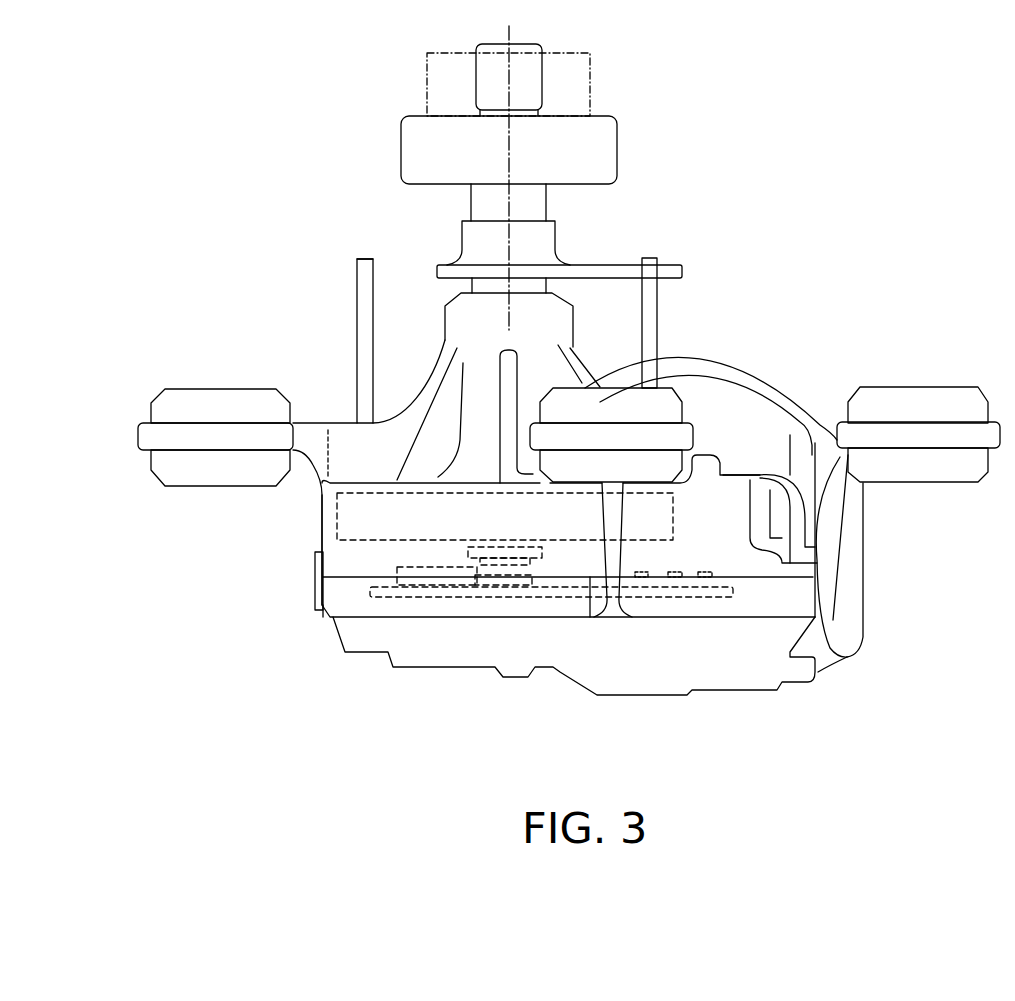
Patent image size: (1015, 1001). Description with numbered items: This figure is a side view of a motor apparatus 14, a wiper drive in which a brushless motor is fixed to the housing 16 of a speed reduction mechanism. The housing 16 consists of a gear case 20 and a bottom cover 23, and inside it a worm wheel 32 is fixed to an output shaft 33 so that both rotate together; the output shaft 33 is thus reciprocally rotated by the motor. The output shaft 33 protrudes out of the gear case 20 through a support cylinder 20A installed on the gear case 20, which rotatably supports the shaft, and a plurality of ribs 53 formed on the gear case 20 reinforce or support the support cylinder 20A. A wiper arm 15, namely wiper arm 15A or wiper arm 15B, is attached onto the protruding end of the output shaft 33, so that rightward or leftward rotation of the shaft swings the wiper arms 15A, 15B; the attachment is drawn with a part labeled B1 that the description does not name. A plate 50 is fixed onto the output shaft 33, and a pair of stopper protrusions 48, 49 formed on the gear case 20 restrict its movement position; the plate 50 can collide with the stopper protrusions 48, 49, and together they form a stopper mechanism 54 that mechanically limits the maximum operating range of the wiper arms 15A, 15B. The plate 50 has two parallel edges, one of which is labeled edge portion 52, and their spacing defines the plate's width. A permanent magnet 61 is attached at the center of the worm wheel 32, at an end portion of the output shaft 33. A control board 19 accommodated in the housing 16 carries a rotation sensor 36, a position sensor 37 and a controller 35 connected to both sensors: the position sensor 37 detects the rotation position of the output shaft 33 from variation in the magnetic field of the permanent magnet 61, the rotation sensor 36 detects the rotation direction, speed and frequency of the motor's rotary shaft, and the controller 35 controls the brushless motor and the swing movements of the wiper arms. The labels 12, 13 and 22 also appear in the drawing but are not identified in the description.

The drive unit 12 is at (262, 93).
The drive unit 13 is at (569, 391).
The bolt B1 is at (470, 38).
The wiper arm 15 is at (615, 153).
The wiper arm 15A is at (509, 150).
The wiper arm 15B is at (509, 150).
The output shaft 33 is at (482, 205).
The plate 50 is at (612, 246).
The edge portion 52 is at (622, 265).
The stopper protrusion 48 is at (360, 280).
The stopper mechanism 54 is at (345, 248).
The stopper protrusion 49 is at (657, 298).
The support cylinder 20A is at (452, 327).
The rib 53 is at (507, 402).
The motor apparatus 14 is at (850, 320).
The arm 22 is at (790, 390).
The housing 16 is at (305, 520).
The worm wheel 32 is at (568, 532).
The gear case 20 is at (353, 565).
The bottom cover 23 is at (760, 665).
The control board 19 is at (443, 603).
The controller 35 is at (400, 597).
The position sensor 37 is at (492, 587).
The permanent magnet 61 is at (523, 552).
The rotation sensor 36 is at (640, 592).